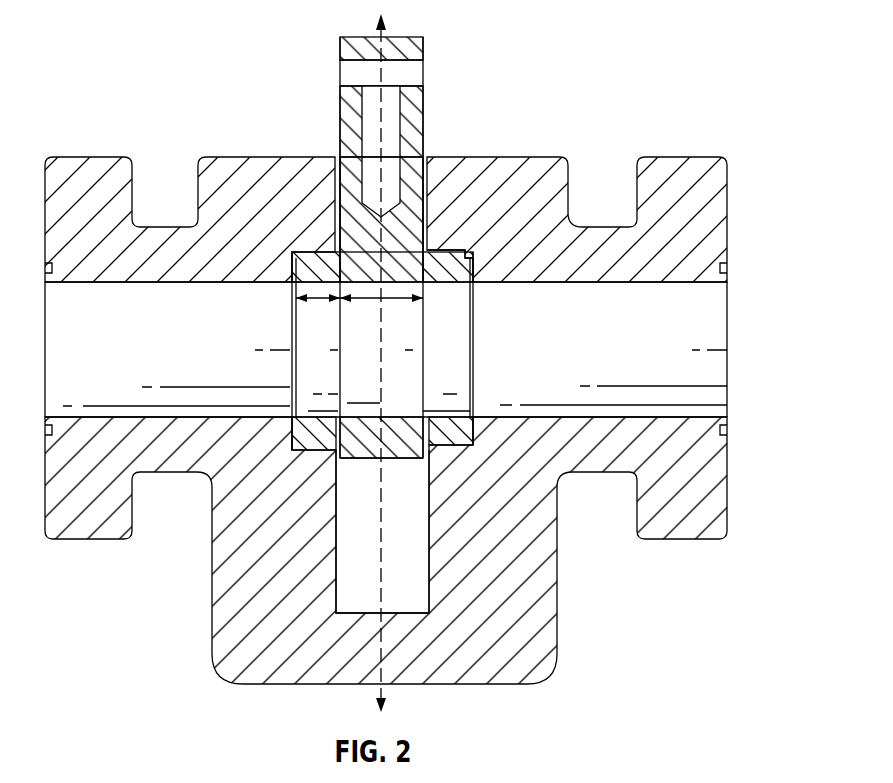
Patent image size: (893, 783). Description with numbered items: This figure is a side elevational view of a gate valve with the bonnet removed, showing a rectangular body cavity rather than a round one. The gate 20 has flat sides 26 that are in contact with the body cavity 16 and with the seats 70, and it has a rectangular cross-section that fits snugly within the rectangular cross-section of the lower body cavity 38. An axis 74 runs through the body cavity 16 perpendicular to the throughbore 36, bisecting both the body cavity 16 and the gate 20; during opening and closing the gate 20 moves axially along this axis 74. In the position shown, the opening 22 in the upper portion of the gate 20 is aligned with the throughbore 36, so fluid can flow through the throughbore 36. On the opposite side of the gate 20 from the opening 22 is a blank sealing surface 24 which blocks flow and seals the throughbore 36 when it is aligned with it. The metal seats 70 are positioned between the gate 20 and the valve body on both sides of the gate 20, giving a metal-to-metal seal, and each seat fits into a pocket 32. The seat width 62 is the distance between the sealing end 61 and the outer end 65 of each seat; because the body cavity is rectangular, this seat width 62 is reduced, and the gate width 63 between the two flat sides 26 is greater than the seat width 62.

The body cavity 16 is at (453, 178).
The gate 20 is at (373, 283).
The opening 22 is at (388, 393).
The blank sealing surface 24 is at (350, 232).
The flat sides 26 is at (420, 173).
The pocket 32 is at (450, 452).
The throughbore 36 is at (707, 367).
The lower body cavity 38 is at (345, 560).
The sealing end 61 is at (338, 358).
The seat width 62 is at (314, 303).
The gate width 63 is at (433, 253).
The outer end 65 is at (285, 438).
The seats 70 is at (460, 268).
The axis 74 is at (385, 123).